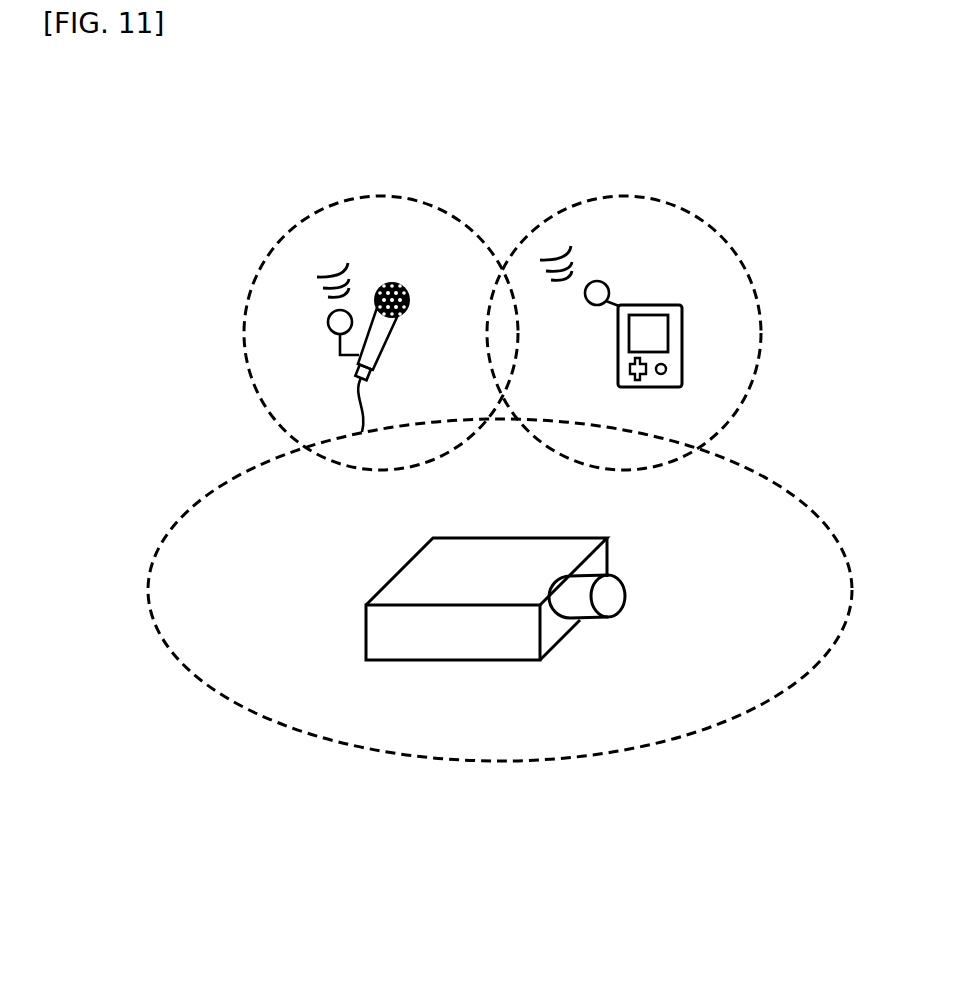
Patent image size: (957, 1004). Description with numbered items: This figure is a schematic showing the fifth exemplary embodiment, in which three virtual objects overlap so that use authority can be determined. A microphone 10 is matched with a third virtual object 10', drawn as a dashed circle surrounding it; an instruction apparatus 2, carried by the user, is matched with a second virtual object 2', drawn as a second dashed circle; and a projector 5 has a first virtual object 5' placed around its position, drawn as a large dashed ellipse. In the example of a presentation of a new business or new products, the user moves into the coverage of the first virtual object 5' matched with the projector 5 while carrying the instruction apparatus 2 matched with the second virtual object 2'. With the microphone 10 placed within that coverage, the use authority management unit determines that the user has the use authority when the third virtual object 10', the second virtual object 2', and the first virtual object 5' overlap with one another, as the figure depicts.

The third virtual object 10' is at (368, 317).
The second virtual object 2' is at (635, 315).
The first virtual object 5' is at (500, 639).
The microphone 10 is at (391, 347).
The instruction apparatus 2 is at (611, 316).
The projector 5 is at (495, 560).